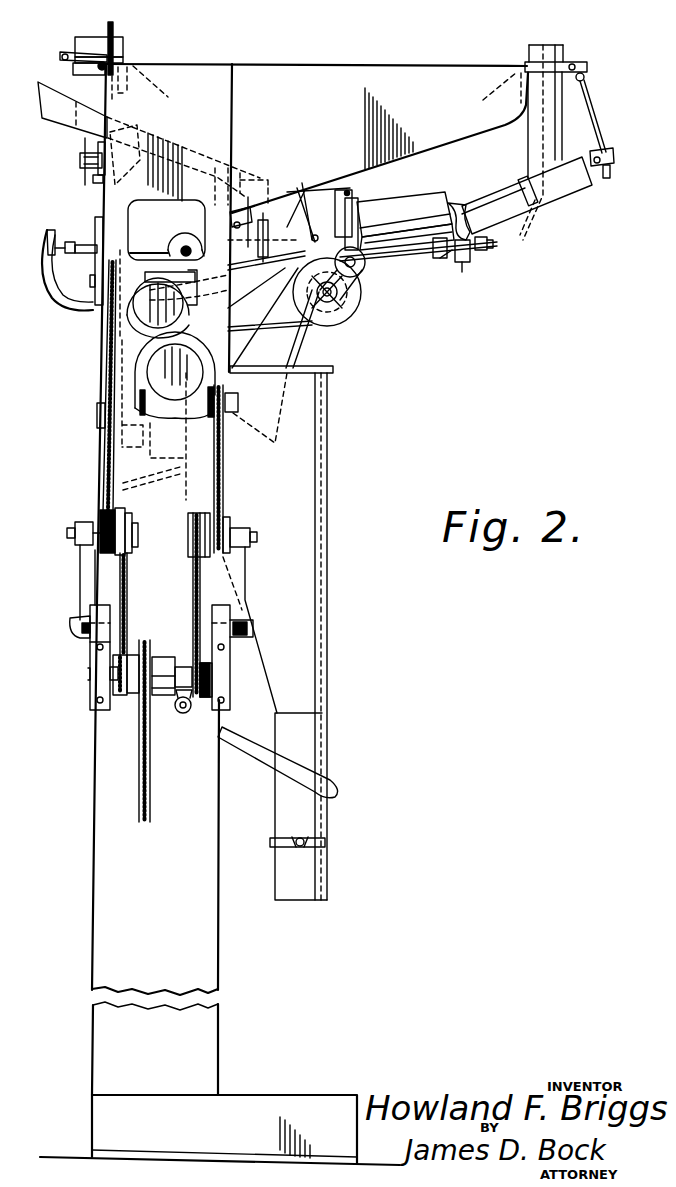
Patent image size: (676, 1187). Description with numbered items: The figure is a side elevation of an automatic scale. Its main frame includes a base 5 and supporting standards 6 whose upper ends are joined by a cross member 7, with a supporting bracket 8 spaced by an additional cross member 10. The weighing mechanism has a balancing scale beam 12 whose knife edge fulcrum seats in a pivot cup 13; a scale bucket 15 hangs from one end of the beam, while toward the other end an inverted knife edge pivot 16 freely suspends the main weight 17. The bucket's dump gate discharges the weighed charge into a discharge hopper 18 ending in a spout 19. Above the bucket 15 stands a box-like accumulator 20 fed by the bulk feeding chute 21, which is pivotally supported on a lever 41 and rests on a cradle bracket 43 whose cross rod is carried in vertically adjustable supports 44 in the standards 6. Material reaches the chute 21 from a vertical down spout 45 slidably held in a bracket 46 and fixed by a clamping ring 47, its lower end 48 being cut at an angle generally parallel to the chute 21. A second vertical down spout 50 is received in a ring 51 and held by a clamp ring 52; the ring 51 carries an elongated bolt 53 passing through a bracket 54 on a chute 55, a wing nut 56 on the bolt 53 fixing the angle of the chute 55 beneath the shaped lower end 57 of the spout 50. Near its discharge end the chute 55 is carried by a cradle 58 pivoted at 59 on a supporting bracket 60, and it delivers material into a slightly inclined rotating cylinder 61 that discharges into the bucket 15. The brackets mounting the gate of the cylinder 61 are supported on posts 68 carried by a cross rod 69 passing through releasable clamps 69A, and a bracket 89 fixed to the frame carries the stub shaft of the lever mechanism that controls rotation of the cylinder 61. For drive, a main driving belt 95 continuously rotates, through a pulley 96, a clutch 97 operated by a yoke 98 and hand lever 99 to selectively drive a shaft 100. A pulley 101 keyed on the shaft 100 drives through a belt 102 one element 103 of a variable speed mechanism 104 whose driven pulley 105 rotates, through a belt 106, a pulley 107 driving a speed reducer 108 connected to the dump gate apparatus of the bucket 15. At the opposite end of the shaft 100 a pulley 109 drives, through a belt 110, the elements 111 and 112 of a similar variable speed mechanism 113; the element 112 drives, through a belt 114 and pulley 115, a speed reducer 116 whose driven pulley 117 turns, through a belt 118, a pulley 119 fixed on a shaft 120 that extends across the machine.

The base 5 is at (262, 1105).
The supporting standards 6 is at (97, 905).
The cross member 7 is at (156, 80).
The supporting bracket 8 is at (352, 66).
The cross member 10 is at (495, 80).
The balancing scale beam 12 is at (150, 246).
The pivot cup 13 is at (186, 242).
The scale bucket 15 is at (296, 349).
The inverted knife edge pivot 16 is at (109, 261).
The main weight 17 is at (97, 410).
The discharge hopper 18 is at (320, 557).
The spout 19 is at (325, 760).
The accumulator 20 is at (270, 183).
The bulk feeding chute 21 is at (209, 153).
The lever 41 is at (240, 200).
The bracket 43 is at (95, 178).
The adjustable supports 44 is at (80, 160).
The vertical down spout 45 is at (94, 42).
The bracket 46 is at (70, 67).
The clamping ring 47 is at (74, 48).
The lower end 48 is at (73, 130).
The vertical down spout 50 is at (566, 50).
The ring 51 is at (586, 80).
The clamp ring 52 is at (587, 66).
The elongated bolt 53 is at (603, 128).
The bracket 54 is at (615, 155).
The chute 55 is at (575, 195).
The wing nut 56 is at (612, 172).
The lower end 57 is at (533, 209).
The cradle 58 is at (458, 203).
The pivot 59 is at (460, 265).
The supporting bracket 60 is at (482, 252).
The cylinder 61 is at (421, 200).
The posts 68 is at (318, 190).
The cross rod 69 is at (390, 262).
The releasable clamps 69A is at (362, 278).
The bracket 89 is at (270, 285).
The main driving belt 95 is at (151, 793).
The pulley 96 is at (152, 650).
The clutch 97 is at (166, 660).
The yoke 98 is at (172, 716).
The hand lever 99 is at (262, 760).
The shaft 100 is at (90, 688).
The pulley 101 is at (210, 715).
The belt 102 is at (193, 581).
The element 103 is at (190, 512).
The variable speed mechanism 104 is at (245, 592).
The pulley 105 is at (228, 518).
The belt 106 is at (228, 460).
The pulley 107 is at (238, 405).
The speed reducer 108 is at (172, 412).
The pulley 109 is at (90, 678).
The belt 110 is at (120, 592).
The element 111 is at (112, 556).
The element 112 is at (100, 522).
The variable speed mechanism 113 is at (73, 553).
The belt 114 is at (110, 470).
The pulley 115 is at (92, 312).
The speed reducer 116 is at (125, 348).
The pulley 117 is at (191, 291).
The belt 118 is at (265, 318).
The pulley 119 is at (345, 322).
The shaft 120 is at (334, 298).